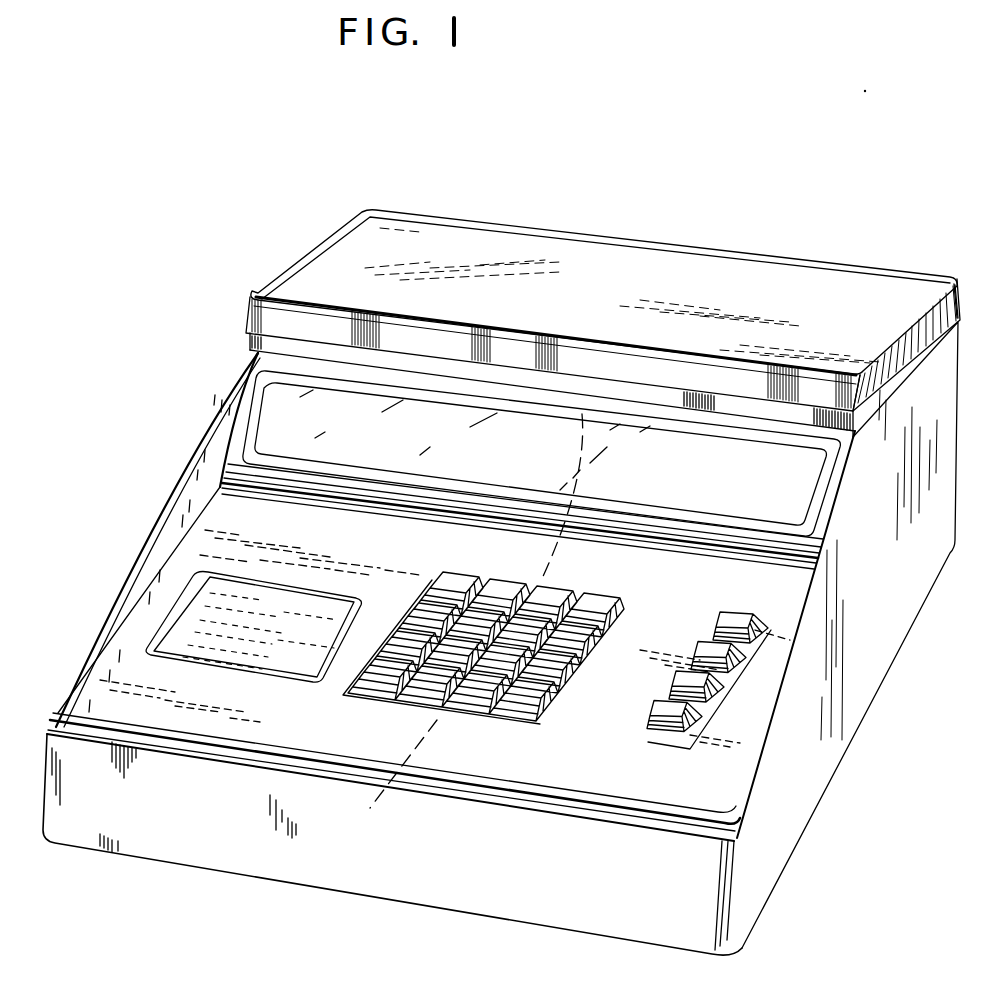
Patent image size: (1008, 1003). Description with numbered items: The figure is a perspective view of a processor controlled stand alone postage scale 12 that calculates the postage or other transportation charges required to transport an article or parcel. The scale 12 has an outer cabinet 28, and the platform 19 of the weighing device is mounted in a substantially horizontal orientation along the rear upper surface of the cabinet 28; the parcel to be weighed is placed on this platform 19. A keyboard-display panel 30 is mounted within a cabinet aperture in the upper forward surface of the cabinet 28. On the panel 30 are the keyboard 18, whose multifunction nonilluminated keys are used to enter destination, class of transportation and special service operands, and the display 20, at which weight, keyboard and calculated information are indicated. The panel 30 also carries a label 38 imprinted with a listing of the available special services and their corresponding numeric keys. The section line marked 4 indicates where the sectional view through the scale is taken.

The postage scale 12 is at (218, 275).
The platform 19 is at (370, 230).
The display 20 is at (287, 417).
The keyboard 18 is at (452, 560).
The label 38 is at (300, 670).
The keyboard-display panel 30 is at (680, 797).
The outer cabinet 28 is at (773, 837).
The section line 4- 4 is at (540, 420).